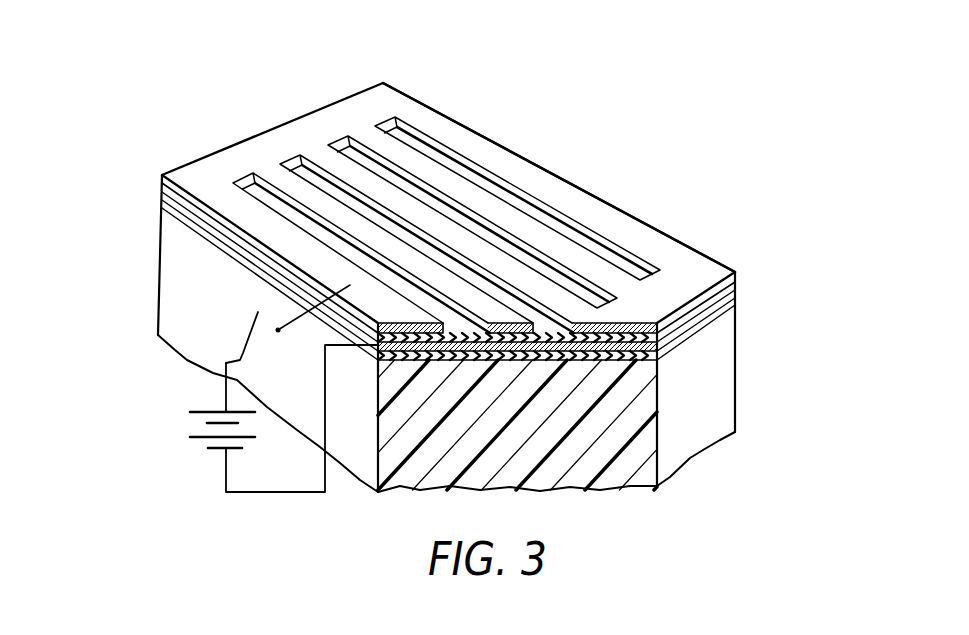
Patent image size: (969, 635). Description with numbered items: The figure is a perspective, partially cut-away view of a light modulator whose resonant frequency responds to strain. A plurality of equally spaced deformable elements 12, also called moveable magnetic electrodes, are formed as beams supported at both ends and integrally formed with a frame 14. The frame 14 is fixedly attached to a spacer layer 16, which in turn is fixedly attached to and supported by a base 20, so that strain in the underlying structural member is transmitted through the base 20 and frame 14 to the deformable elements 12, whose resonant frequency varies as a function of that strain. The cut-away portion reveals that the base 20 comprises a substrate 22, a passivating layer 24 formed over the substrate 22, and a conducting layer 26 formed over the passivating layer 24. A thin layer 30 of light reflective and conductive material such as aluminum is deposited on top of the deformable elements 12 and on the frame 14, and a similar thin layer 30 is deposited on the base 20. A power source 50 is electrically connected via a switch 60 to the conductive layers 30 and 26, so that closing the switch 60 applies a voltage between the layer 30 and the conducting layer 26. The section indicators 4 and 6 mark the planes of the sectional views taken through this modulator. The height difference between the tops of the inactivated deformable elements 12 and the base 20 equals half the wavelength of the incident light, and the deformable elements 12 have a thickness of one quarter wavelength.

The section line 4- 4 is at (85, 287).
The section line 6- 6 is at (230, 28).
The deformable elements 12 is at (282, 182).
The frame 14 is at (598, 213).
The spacer layer 16 is at (743, 289).
The base 20 is at (148, 240).
The substrate 22 is at (693, 440).
The passivating layer 24 is at (737, 300).
The conducting layer 26 is at (742, 294).
The thin layer of light reflective and conductive material 30 is at (688, 262).
The power source 50 is at (204, 456).
The switch 60 is at (243, 334).